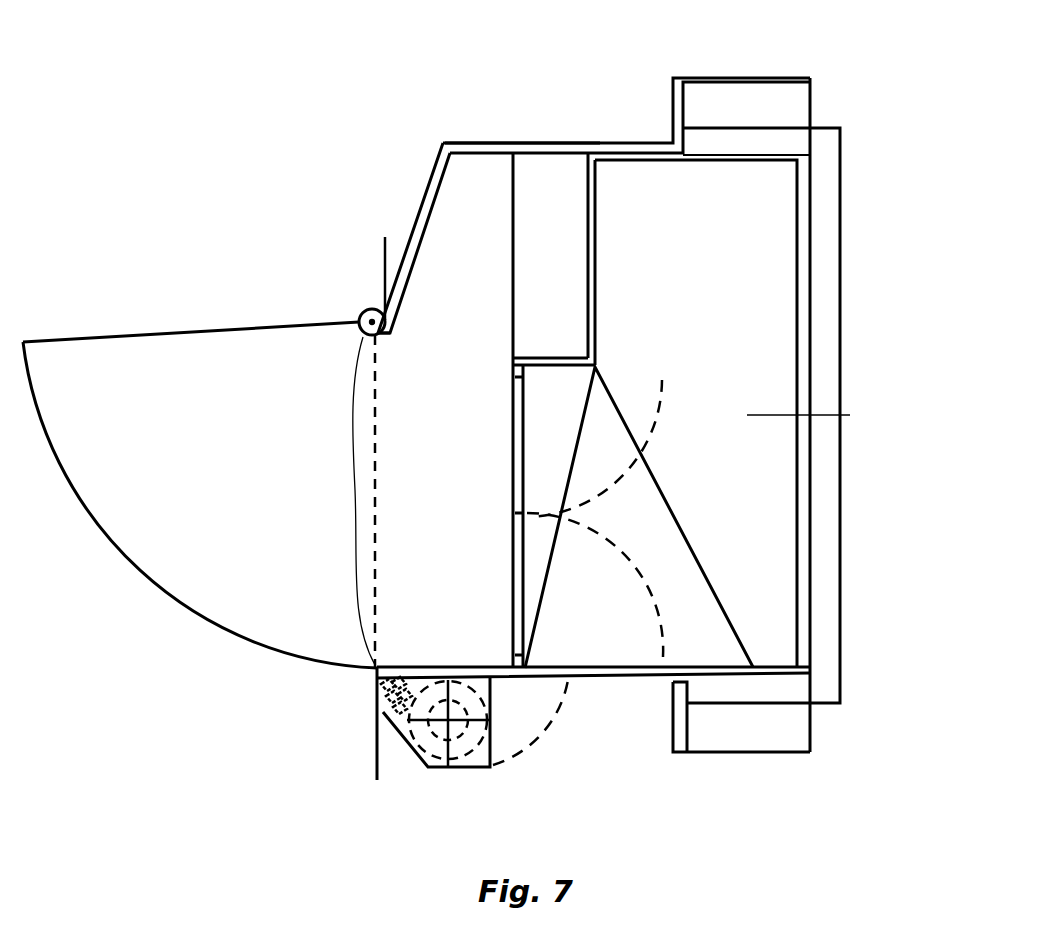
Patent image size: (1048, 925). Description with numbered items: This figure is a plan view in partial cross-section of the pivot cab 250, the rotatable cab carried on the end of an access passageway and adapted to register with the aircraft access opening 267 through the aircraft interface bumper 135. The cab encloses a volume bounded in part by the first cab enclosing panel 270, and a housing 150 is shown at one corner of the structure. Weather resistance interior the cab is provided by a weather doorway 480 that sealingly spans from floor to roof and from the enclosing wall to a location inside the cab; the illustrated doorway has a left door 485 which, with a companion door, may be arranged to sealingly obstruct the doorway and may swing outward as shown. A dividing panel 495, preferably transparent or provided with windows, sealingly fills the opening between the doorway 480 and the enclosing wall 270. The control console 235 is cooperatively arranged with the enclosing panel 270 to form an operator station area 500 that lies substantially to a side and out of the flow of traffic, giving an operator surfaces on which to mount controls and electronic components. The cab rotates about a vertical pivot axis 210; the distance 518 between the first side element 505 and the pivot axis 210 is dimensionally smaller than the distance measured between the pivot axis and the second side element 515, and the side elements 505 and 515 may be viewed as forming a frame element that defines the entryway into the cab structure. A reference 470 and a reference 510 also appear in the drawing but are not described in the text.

The aircraft interface bumper 135 is at (760, 728).
The housing 150 is at (470, 767).
The vertical pivot axis 210 is at (363, 313).
The control console 235 is at (562, 183).
The pivot cab 250 is at (926, 304).
The aircraft access opening 267 is at (894, 558).
The first cab enclosing panel 270 is at (625, 150).
The air deflector 470 is at (513, 585).
The weather doorway 480 is at (490, 532).
The left door 485 is at (513, 452).
The dividing panel 495 is at (597, 290).
The operator station area 500 is at (465, 243).
The first side element 505 is at (425, 195).
The lid 510 is at (485, 142).
The second side element 515 is at (633, 773).
The distance 518 is at (388, 336).